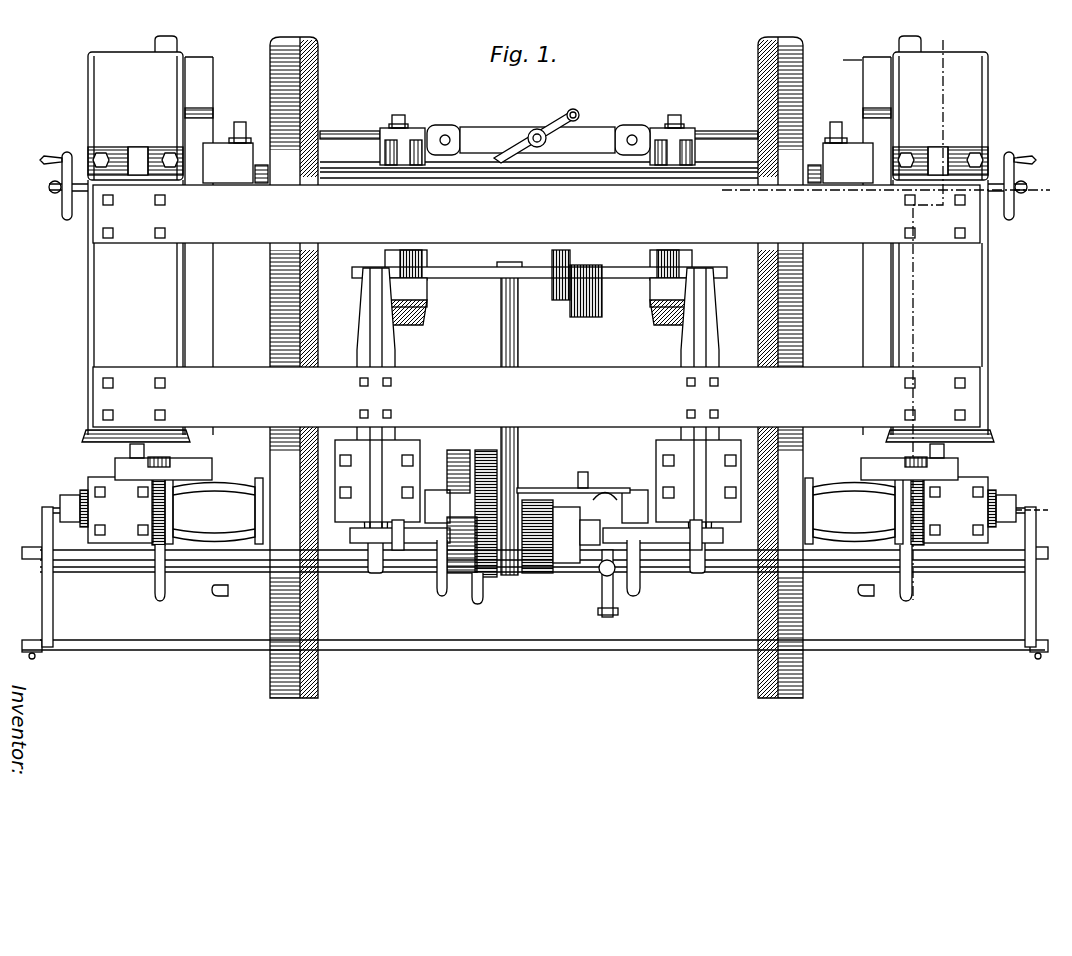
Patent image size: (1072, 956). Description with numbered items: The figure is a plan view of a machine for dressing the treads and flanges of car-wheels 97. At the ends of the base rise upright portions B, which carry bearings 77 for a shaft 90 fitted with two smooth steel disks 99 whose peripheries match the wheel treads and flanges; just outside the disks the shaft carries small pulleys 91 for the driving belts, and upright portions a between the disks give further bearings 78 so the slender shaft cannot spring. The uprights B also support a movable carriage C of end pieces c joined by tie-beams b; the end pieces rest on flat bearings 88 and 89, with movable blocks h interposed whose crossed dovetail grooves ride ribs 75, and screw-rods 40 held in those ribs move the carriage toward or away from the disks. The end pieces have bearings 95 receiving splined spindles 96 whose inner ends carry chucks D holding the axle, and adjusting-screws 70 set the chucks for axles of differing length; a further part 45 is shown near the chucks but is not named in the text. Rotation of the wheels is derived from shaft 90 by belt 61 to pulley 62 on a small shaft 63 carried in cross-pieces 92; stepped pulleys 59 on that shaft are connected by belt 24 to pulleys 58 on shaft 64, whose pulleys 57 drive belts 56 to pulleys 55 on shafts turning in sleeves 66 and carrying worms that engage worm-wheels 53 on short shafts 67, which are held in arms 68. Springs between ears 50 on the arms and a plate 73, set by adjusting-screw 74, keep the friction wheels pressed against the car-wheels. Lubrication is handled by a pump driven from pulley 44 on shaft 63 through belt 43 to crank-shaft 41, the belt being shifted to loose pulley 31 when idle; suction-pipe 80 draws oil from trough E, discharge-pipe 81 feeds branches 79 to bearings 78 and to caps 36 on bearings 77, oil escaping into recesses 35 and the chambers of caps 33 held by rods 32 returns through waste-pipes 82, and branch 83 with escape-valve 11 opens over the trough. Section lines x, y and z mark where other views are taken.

The escape-valve 11 is at (601, 614).
The belt 24 is at (519, 360).
The loose pulley 31 is at (458, 471).
The rods 32 is at (550, 488).
The caps 33 is at (536, 506).
The recesses 35 is at (152, 515).
The caps 36 is at (68, 495).
The screw-rods 40 is at (537, 473).
The crank-shaft 41 is at (588, 486).
The belt 43 is at (486, 513).
The pulley 44 is at (462, 545).
The post 45 is at (240, 122).
The ears 50 is at (445, 133).
The worm-wheels 53 is at (539, 114).
The pulleys 55 is at (538, 320).
The belts 56 is at (427, 290).
The pulleys 57 is at (425, 262).
The pulleys 58 is at (552, 290).
The pulleys 59 is at (524, 585).
The belt 61 is at (537, 536).
The pulley 62 is at (548, 574).
The shaft 63 is at (418, 528).
The shaft 64 is at (486, 278).
The sleeves 66 is at (383, 152).
The short shafts 67 is at (539, 127).
The arms 68 is at (539, 173).
The adjusting-screws 70 is at (62, 212).
The plate 73 is at (537, 140).
The adjusting-screw 74 is at (530, 139).
The ribs 75 is at (125, 470).
The bearings 77 is at (538, 510).
The bearings 78 is at (538, 490).
The branches 79 is at (42, 520).
The suction-pipe 80 is at (485, 598).
The discharge-pipe 81 is at (135, 566).
The waste-pipes 82 is at (898, 596).
The branch 83 is at (602, 593).
The flat bearings 88 is at (222, 466).
The flat bearings 89 is at (527, 61).
The shaft 90 is at (585, 512).
The pulleys 91 is at (534, 511).
The cross-pieces 92 is at (403, 383).
The bearings 95 is at (117, 152).
The spindles 96 is at (206, 184).
The car-wheels 97 is at (536, 367).
The disks 99 is at (537, 501).
The upright portions B is at (538, 246).
The movable frame-work or carriage C is at (538, 247).
The chucks D is at (538, 163).
The trough or tank E is at (535, 603).
The upright portions a is at (538, 324).
The tie-beams b is at (536, 306).
The end pieces c is at (533, 456).
The movable blocks h is at (532, 446).
The section line x x is at (1036, 510).
The section line y y is at (880, 189).
The section line z z is at (926, 321).